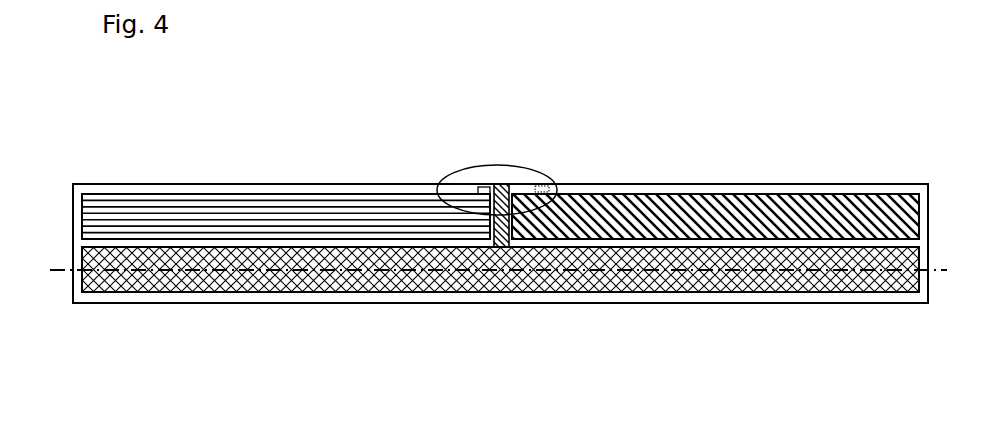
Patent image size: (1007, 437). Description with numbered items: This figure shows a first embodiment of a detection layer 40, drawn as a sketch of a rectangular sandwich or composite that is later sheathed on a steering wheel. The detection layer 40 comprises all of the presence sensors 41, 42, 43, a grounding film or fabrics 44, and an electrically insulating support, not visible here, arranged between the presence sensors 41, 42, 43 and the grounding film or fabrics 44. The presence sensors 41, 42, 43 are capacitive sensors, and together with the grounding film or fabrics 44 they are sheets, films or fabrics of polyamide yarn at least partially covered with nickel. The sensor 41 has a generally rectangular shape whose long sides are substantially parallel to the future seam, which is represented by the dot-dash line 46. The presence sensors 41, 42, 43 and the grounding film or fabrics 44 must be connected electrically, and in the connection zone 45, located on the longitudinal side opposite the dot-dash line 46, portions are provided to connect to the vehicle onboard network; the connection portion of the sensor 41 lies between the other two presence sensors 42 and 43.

The detection layer 40 is at (158, 153).
The presence sensor 41 is at (258, 280).
The presence sensor 42 is at (223, 212).
The presence sensor 43 is at (610, 213).
The grounding film or fabrics 44 is at (507, 296).
The connection zone 45 is at (500, 152).
The dot-dash line 46 is at (56, 277).